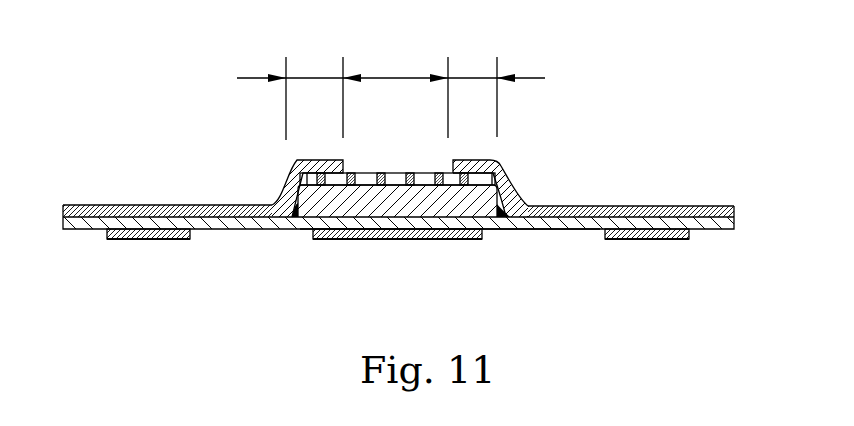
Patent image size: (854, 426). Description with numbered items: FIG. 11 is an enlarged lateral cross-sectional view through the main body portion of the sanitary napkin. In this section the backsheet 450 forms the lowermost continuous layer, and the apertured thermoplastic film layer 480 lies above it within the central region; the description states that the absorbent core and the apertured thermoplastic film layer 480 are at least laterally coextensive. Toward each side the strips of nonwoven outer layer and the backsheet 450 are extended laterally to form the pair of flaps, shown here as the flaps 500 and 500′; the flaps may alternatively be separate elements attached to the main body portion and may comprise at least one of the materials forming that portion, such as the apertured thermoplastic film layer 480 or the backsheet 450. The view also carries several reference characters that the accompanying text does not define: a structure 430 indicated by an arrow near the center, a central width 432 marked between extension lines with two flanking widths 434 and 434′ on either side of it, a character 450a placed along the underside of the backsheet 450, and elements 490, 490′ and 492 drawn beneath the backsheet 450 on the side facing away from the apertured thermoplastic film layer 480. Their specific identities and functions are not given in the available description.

The lid 430 is at (521, 156).
The lid opening width 432 is at (391, 94).
The lid sidewall portion width 434 is at (473, 75).
The lid sidewall portion width 434′ is at (320, 75).
The backsheet 450 is at (518, 230).
The substrate bottom surface 450a is at (592, 230).
The apertured thermoplastic film layer 480 is at (397, 173).
The conductive pad 490 is at (368, 239).
The conductive pad 490′ is at (157, 239).
The solder layer 492 is at (132, 239).
The flaps 500 is at (668, 206).
The lid flange portion 500′ is at (143, 205).